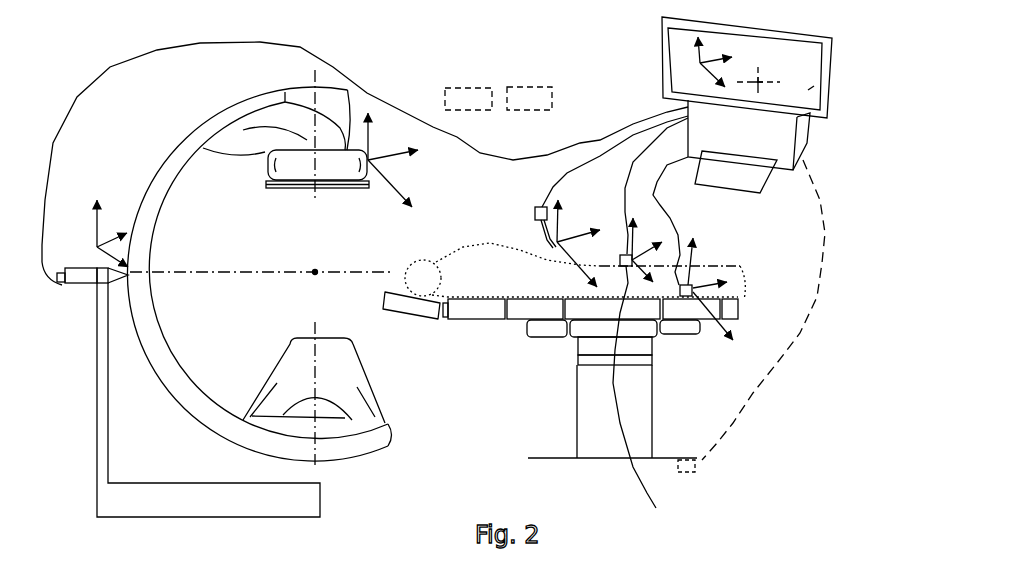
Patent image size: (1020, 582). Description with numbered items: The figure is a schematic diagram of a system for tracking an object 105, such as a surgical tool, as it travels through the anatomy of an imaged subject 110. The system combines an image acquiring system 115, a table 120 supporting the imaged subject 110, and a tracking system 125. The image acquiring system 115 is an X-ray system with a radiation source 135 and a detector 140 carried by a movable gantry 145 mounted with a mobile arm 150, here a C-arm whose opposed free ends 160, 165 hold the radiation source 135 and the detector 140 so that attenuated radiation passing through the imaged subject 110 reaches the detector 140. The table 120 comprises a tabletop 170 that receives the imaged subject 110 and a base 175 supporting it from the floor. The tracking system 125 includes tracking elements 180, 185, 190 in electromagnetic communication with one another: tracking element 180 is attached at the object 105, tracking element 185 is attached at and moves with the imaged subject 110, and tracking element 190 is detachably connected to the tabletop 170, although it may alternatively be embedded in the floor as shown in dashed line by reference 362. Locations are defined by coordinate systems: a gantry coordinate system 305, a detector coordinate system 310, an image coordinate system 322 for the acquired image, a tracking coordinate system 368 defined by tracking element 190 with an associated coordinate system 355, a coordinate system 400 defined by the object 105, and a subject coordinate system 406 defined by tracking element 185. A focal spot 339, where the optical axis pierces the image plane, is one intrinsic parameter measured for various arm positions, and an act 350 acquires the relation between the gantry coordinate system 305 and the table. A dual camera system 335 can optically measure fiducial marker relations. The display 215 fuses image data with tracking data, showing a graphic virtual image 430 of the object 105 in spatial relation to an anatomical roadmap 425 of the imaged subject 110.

The object 105 is at (537, 237).
The imaged subject 110 is at (724, 257).
The image acquiring system 115 is at (391, 90).
The table 120 is at (547, 362).
The tracking system 125 is at (833, 164).
The radiation source 135 is at (359, 351).
The detector 140 is at (287, 192).
The gantry 145 is at (153, 145).
The mobile arm 150 is at (160, 223).
The first free end 160 is at (392, 418).
The second free end 165 is at (262, 160).
The tabletop 170 is at (483, 313).
The base 175 is at (657, 427).
The tracking element 180 is at (533, 207).
The tracking element 185 is at (656, 508).
The tracking element 190 is at (678, 291).
The display 215 is at (660, 55).
The gantry coordinate system 305 is at (100, 215).
The detector coordinate system 310 is at (373, 143).
The image coordinate system 322 is at (735, 54).
The dual camera system 335 is at (520, 86).
The focal spot 339 is at (310, 280).
The act 350 is at (60, 266).
The coordinate system 355 is at (78, 290).
The floor-embedded tracking element location 362 is at (700, 461).
The tracking coordinate system 368 is at (700, 250).
The coordinate system 400 is at (560, 227).
The subject coordinate system 406 is at (638, 227).
The anatomical roadmap 425 is at (809, 90).
The graphic virtual image 430 is at (771, 78).